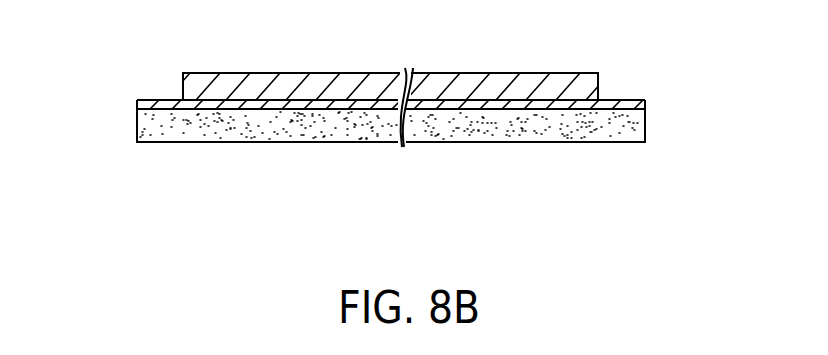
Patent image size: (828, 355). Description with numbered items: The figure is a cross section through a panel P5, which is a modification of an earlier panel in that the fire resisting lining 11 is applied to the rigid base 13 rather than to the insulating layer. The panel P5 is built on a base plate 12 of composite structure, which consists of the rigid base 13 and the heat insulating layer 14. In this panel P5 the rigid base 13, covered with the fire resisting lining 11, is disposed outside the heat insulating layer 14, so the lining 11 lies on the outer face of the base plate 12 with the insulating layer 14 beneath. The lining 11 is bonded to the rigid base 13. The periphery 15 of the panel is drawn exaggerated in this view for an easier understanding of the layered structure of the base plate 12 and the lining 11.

The fire resisting lining 11 is at (300, 82).
The base plate 12 is at (387, 190).
The rigid base 13 is at (173, 108).
The heat insulating layer 14 is at (220, 127).
The periphery 15 is at (159, 100).
The panel P5 is at (505, 157).